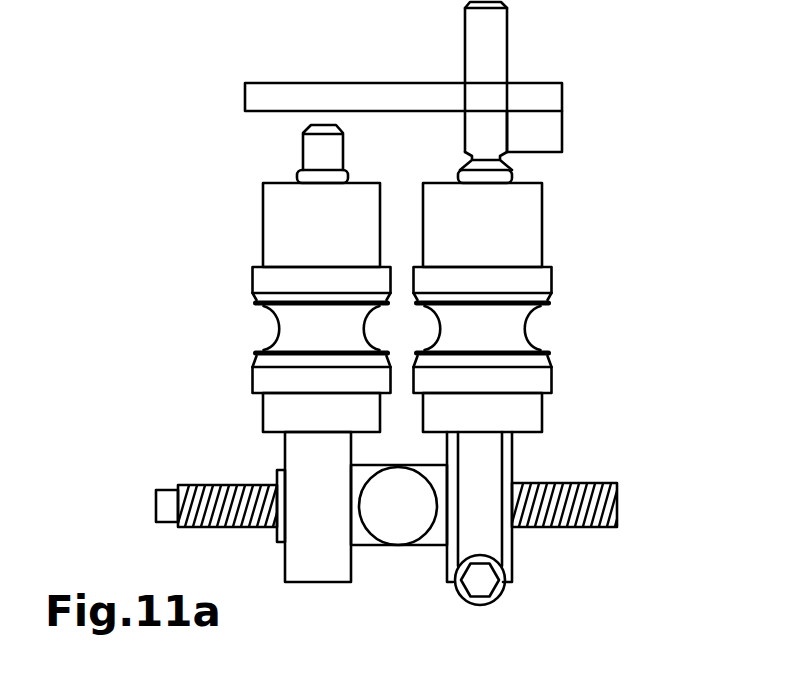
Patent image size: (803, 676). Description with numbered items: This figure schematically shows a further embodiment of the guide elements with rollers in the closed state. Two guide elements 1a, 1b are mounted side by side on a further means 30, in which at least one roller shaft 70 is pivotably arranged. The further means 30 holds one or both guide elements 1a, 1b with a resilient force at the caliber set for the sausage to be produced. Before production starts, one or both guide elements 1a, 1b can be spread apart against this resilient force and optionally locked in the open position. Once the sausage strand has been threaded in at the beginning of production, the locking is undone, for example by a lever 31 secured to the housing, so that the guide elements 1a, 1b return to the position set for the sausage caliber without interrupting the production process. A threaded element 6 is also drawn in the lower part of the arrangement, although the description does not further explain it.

The guide element 1a is at (278, 216).
The guide element 1b is at (530, 222).
The threaded rod 6 is at (179, 485).
The further means 30 is at (582, 557).
The lever 31 is at (493, 44).
The roller shaft 70 is at (477, 483).